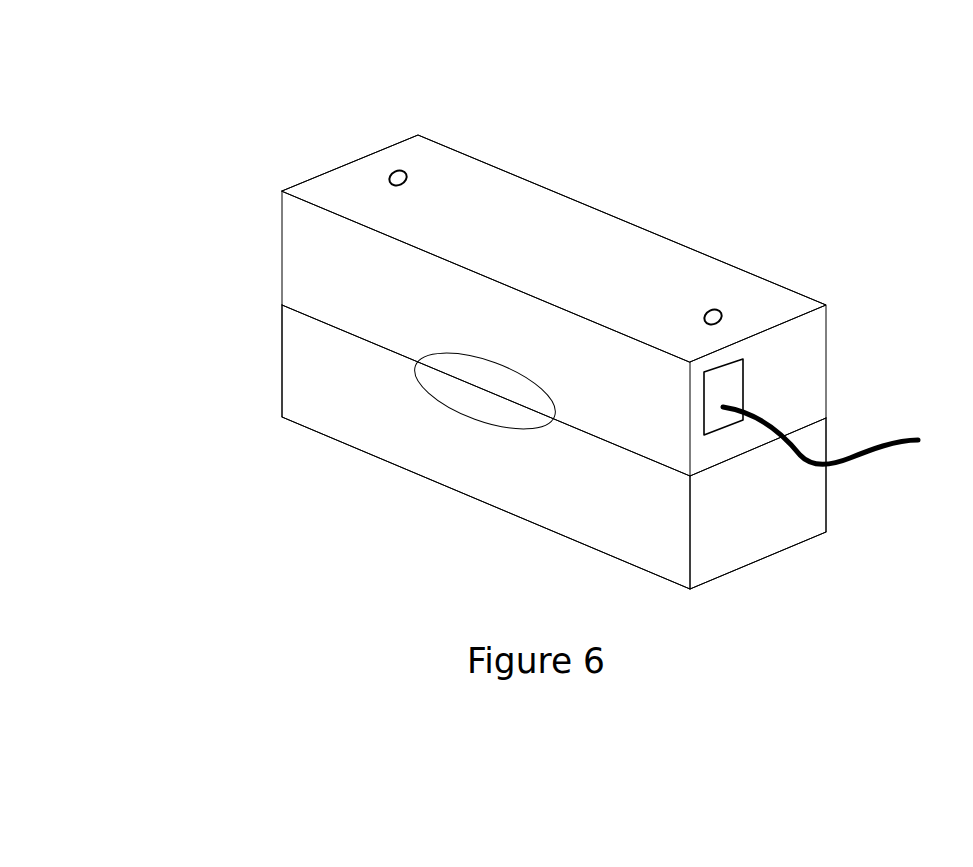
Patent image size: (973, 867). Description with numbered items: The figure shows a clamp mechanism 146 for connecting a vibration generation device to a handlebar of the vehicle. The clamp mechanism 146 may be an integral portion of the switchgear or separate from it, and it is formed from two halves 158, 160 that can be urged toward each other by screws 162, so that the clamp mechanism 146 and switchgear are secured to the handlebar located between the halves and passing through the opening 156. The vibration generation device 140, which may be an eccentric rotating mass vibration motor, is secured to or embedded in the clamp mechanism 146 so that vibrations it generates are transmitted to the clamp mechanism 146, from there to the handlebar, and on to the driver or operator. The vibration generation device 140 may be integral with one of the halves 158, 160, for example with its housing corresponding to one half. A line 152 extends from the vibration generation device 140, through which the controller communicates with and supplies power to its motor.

The clamp mechanism 146 is at (648, 250).
The half 158 is at (362, 178).
The half 160 is at (322, 354).
The opening 156 is at (483, 397).
The screws 162 is at (403, 171).
The vibration generation device 140 is at (743, 373).
The line 152 is at (880, 445).